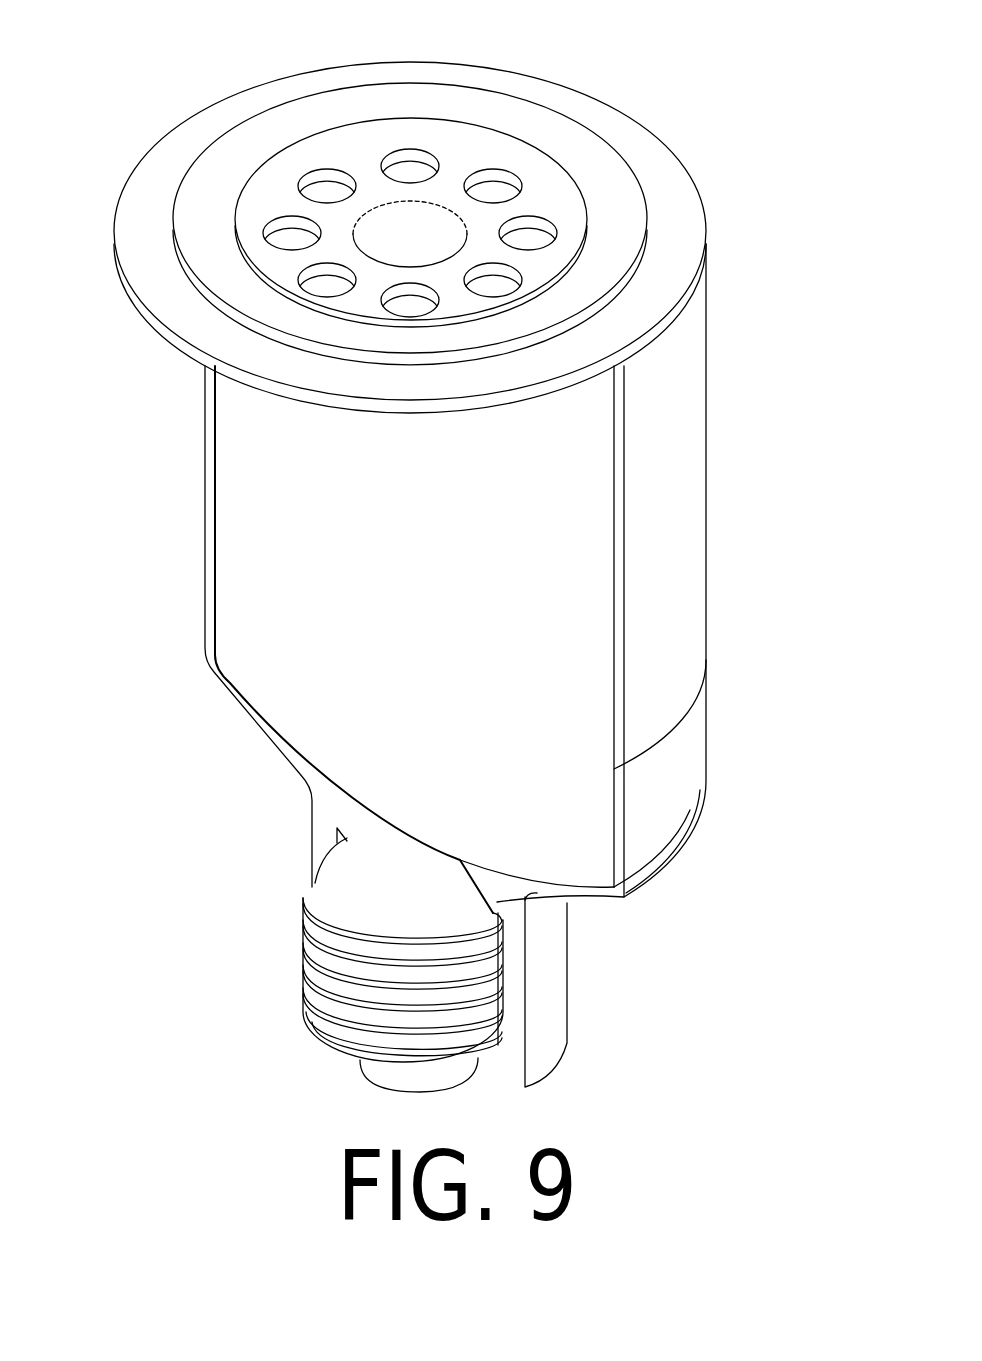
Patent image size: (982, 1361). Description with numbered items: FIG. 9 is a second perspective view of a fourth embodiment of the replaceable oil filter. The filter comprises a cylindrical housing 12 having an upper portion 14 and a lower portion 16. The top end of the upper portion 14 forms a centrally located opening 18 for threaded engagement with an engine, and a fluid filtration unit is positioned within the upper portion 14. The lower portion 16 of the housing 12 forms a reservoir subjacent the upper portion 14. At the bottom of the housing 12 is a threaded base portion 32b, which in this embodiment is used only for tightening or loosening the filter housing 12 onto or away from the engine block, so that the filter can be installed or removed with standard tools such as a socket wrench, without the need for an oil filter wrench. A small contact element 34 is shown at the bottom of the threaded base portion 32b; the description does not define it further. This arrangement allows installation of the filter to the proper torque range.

The cylindrical housing 12 is at (183, 443).
The upper portion 14 is at (693, 535).
The lower portion 16 is at (685, 790).
The centrally located opening 18 is at (620, 133).
The threaded base portion 32b is at (323, 983).
The bottom contact 34 is at (480, 1087).